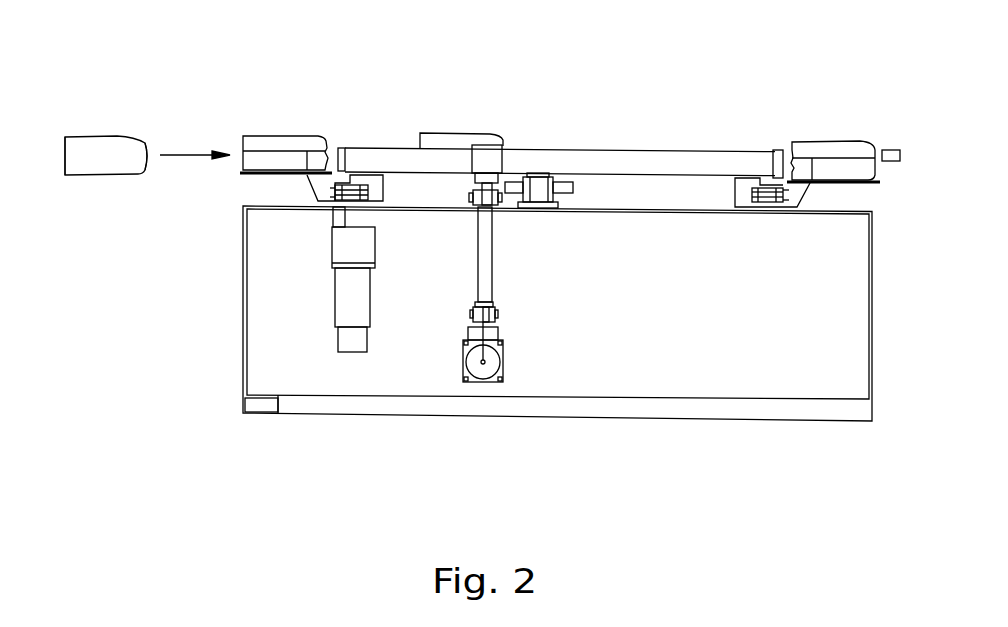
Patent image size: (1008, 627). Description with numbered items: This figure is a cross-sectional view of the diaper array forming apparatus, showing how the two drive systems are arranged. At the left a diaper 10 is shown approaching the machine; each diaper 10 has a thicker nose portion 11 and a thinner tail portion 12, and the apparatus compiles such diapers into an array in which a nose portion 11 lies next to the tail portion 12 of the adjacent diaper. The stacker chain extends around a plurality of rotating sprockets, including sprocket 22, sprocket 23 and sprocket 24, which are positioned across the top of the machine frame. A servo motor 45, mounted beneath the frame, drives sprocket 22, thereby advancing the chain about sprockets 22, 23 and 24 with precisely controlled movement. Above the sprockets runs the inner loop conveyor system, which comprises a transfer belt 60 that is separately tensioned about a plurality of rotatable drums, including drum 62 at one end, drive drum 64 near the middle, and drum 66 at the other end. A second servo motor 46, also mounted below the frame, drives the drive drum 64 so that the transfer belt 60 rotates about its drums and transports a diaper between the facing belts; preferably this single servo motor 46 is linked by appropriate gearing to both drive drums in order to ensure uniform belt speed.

The diaper 10 is at (100, 124).
The nose portion 11 is at (147, 148).
The tail portion 12 is at (65, 157).
The sprocket 22 is at (360, 198).
The sprocket 23 is at (567, 188).
The sprocket 24 is at (758, 197).
The servo motor 45 is at (342, 235).
The second servo motor 46 is at (492, 363).
The transfer belt 60 is at (670, 167).
The rotatable drum 62 is at (343, 140).
The drive drum 64 is at (490, 158).
The rotatable drum 66 is at (779, 183).